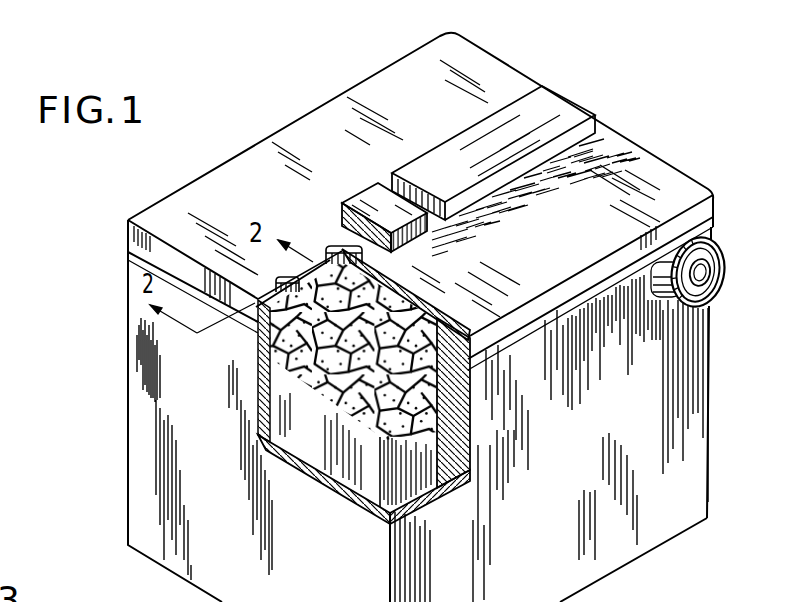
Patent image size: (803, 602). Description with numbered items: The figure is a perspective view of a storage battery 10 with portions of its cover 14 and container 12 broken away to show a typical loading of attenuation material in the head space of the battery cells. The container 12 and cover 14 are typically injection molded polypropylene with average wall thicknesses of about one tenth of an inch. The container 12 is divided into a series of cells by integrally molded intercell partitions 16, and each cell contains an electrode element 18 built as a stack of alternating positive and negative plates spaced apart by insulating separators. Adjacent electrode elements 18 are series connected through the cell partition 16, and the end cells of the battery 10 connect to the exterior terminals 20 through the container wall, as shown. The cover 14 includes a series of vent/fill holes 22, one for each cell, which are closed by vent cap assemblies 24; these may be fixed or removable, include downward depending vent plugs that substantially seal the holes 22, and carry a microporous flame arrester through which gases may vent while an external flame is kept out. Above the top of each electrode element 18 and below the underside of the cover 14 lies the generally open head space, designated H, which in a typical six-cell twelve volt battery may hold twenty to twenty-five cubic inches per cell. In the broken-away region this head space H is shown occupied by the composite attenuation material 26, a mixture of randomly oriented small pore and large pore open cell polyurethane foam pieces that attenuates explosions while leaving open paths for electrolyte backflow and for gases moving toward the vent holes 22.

The storage battery 10 is at (322, 86).
The container 12 is at (127, 398).
The cover 14 is at (490, 58).
The intercell partitions 16 is at (444, 431).
The electrode element 18 is at (367, 466).
The exterior terminals 20 is at (706, 271).
The vent/fill holes 22 is at (336, 245).
The vent cap assemblies 24 is at (437, 150).
The composite attenuation material 26 is at (352, 388).
The head space H is at (438, 298).